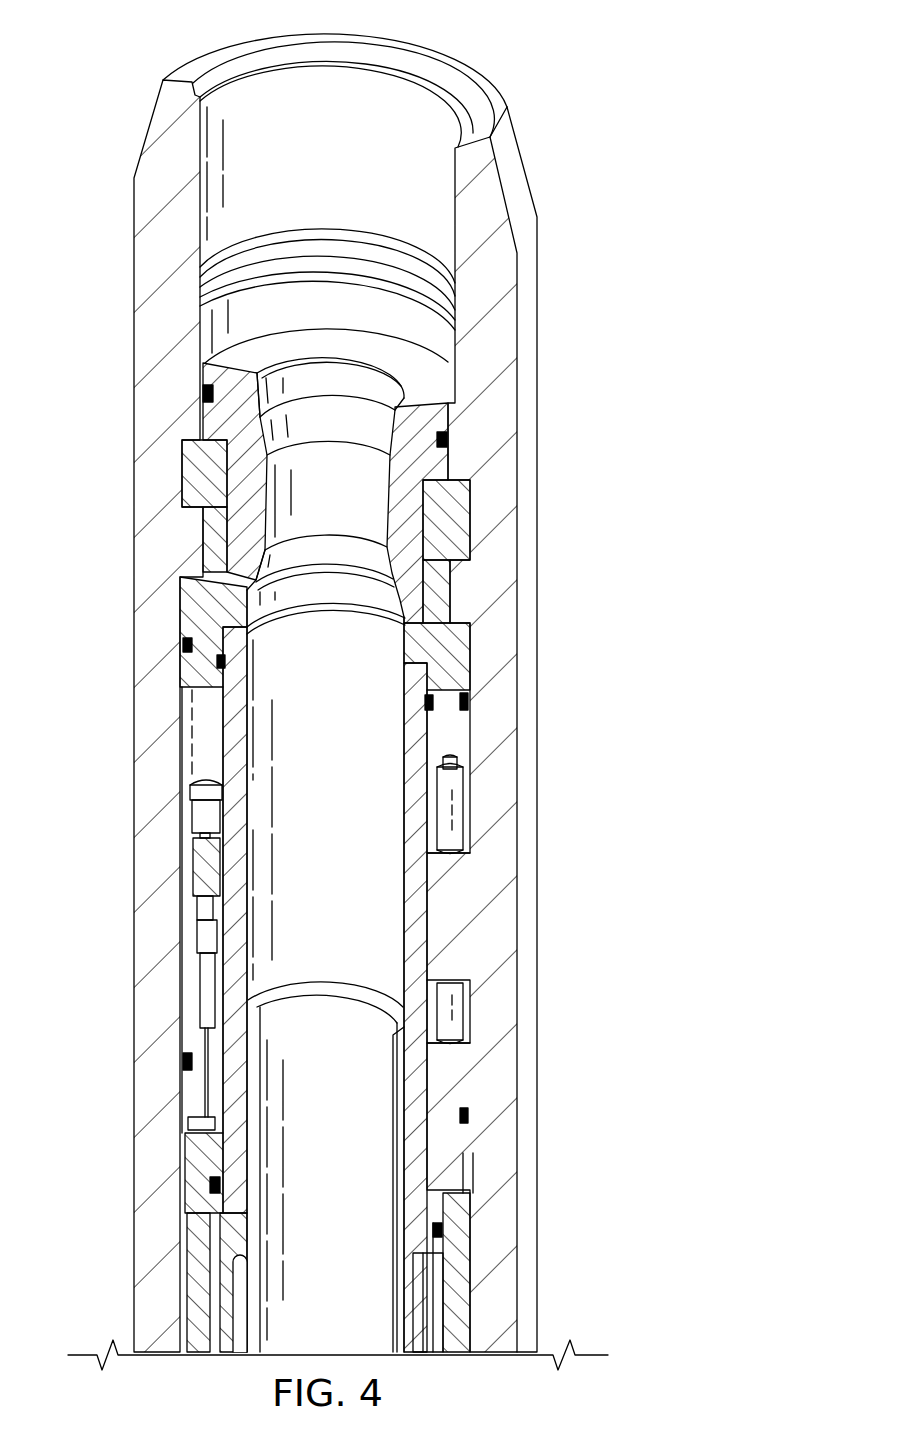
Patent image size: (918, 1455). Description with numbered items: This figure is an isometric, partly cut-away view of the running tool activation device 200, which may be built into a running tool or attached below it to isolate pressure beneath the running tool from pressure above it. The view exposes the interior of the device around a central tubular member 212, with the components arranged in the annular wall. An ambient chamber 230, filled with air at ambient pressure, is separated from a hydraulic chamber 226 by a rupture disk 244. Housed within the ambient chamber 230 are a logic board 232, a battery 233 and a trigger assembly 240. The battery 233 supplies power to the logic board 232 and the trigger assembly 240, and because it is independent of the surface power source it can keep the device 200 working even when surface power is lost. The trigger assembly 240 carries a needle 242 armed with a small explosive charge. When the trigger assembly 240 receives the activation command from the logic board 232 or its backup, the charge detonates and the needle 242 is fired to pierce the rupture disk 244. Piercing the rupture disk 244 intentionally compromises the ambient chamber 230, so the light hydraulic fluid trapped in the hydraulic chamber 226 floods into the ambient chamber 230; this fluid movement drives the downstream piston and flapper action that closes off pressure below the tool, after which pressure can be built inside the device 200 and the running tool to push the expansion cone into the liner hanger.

The running tool activation device 200 is at (541, 101).
The mandrel 212 is at (340, 513).
The hydraulic chamber 226 is at (183, 1167).
The ambient chamber 230 is at (197, 717).
The logic board 232 is at (453, 752).
The battery 233 is at (452, 1027).
The trigger assembly 240 is at (201, 766).
The needle 242 is at (197, 878).
The rupture disk 244 is at (197, 947).